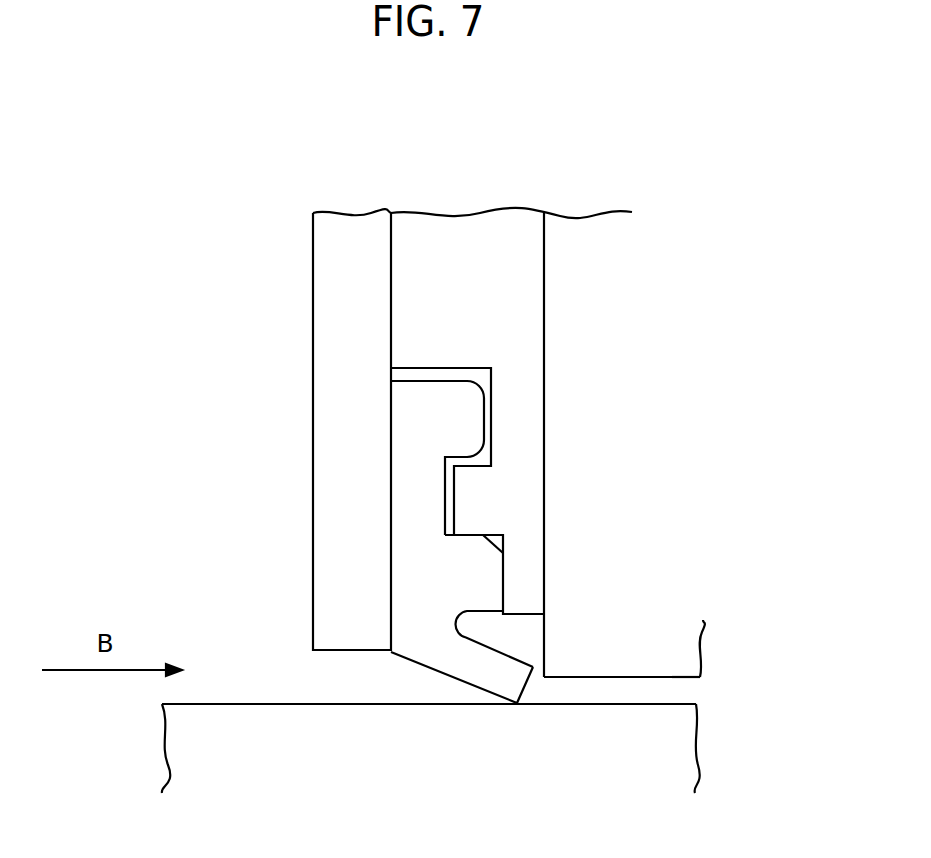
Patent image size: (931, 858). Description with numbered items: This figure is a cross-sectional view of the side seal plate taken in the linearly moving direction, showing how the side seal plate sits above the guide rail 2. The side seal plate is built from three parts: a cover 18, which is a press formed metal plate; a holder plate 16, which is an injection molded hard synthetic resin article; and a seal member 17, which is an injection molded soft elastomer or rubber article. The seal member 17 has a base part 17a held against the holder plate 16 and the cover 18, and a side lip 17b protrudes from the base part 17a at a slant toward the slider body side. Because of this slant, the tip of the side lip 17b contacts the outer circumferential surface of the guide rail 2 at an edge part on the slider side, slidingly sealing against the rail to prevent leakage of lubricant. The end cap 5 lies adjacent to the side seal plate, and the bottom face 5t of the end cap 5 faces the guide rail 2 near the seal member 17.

The guide rail 2 is at (243, 704).
The end cap 5 is at (665, 587).
The bottom face of the end cap 5t is at (672, 680).
The holder plate 16 is at (469, 268).
The seal member 17 is at (382, 570).
The base part 17a is at (485, 578).
The side lip 17b is at (512, 657).
The cover 18 is at (313, 310).